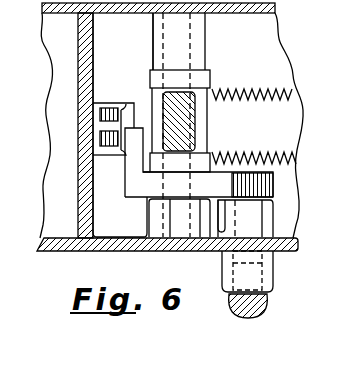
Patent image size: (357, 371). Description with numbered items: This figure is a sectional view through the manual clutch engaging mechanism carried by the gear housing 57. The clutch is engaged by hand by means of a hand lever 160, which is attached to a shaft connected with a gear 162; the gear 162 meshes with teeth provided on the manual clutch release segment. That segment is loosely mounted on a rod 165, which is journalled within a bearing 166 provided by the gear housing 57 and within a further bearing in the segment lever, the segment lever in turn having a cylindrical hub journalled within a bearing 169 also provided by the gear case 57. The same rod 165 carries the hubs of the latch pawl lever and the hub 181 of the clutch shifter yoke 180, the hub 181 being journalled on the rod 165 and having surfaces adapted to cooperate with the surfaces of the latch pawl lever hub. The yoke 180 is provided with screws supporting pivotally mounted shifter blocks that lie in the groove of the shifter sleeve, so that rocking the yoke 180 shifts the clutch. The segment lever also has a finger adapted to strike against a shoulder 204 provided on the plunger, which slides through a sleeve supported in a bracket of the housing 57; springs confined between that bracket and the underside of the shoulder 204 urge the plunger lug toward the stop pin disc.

The gear housing 57 is at (68, 252).
The hand lever 160 is at (268, 300).
The gear 162 is at (274, 187).
The rod 165 is at (181, 46).
The bearing 166 is at (153, 33).
The bearing 169 is at (147, 213).
The clutch shifter yoke 180 is at (196, 119).
The hub 181 is at (150, 97).
The shoulder 204 is at (130, 111).